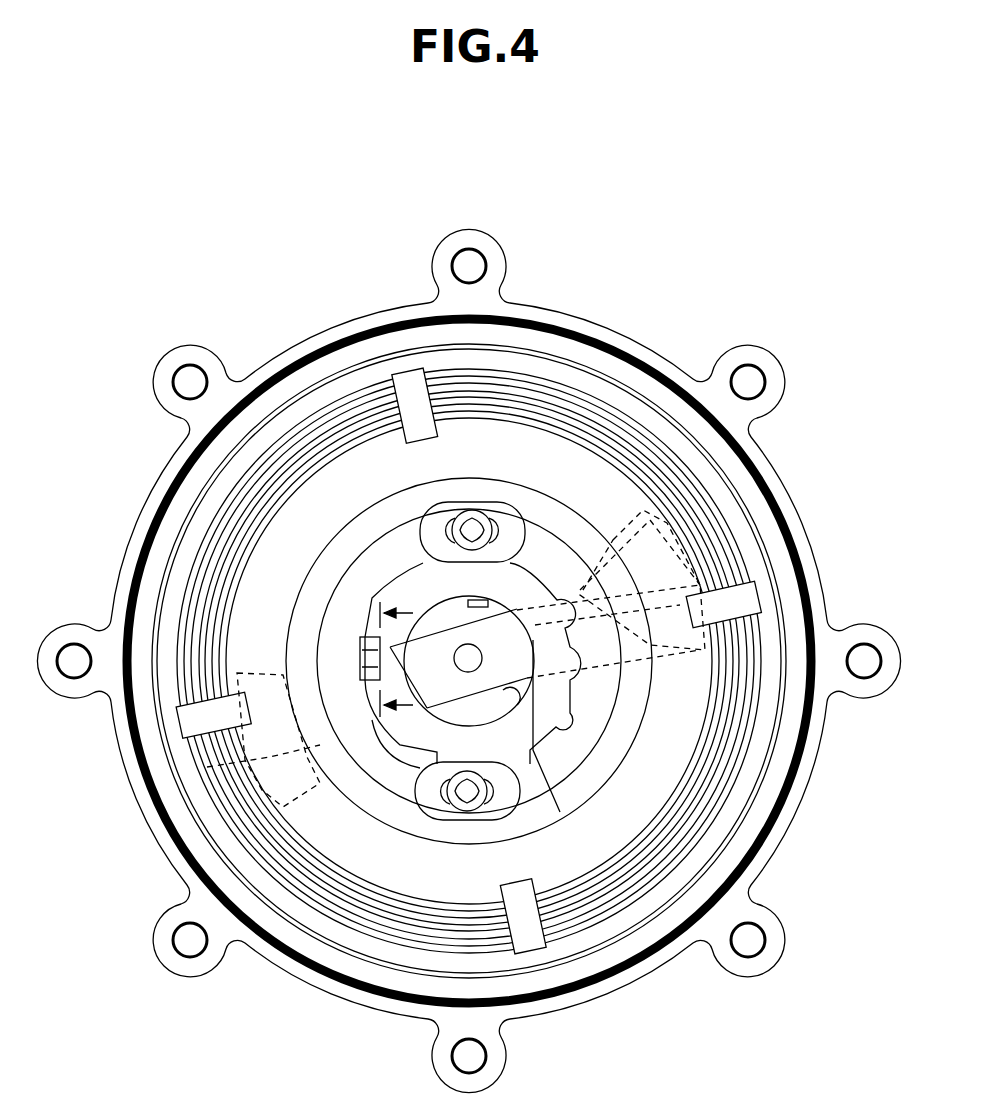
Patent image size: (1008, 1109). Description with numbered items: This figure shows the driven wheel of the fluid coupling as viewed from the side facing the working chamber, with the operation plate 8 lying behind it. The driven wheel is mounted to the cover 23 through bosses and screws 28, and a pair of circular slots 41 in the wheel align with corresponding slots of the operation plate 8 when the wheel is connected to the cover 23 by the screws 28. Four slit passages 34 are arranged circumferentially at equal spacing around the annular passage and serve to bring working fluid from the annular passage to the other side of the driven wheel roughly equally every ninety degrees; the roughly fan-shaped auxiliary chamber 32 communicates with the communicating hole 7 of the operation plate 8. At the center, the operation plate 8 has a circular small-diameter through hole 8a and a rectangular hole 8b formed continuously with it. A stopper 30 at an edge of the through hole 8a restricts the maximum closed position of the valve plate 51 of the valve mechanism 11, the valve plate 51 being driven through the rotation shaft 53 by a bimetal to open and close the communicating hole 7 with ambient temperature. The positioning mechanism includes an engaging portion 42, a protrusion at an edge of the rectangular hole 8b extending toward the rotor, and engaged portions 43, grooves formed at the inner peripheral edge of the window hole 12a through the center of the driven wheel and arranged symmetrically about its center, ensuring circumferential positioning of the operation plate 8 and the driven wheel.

The communicating hole 7 is at (650, 512).
The operation plate 8 is at (383, 722).
The through hole 8a is at (560, 750).
The rectangular hole 8b is at (407, 743).
The valve mechanism 11 is at (456, 710).
The window hole 12a is at (548, 725).
The cover 23 is at (808, 818).
The screw 28 is at (472, 528).
The stopper 30 is at (487, 600).
The auxiliary chamber 32 is at (740, 660).
The slit passage 34 is at (392, 375).
The circular slot 41 is at (468, 658).
The engaging portion 42 is at (366, 645).
The engaged portion 43 is at (368, 672).
The valve plate 51 is at (513, 667).
The rotation shaft 53 is at (437, 530).